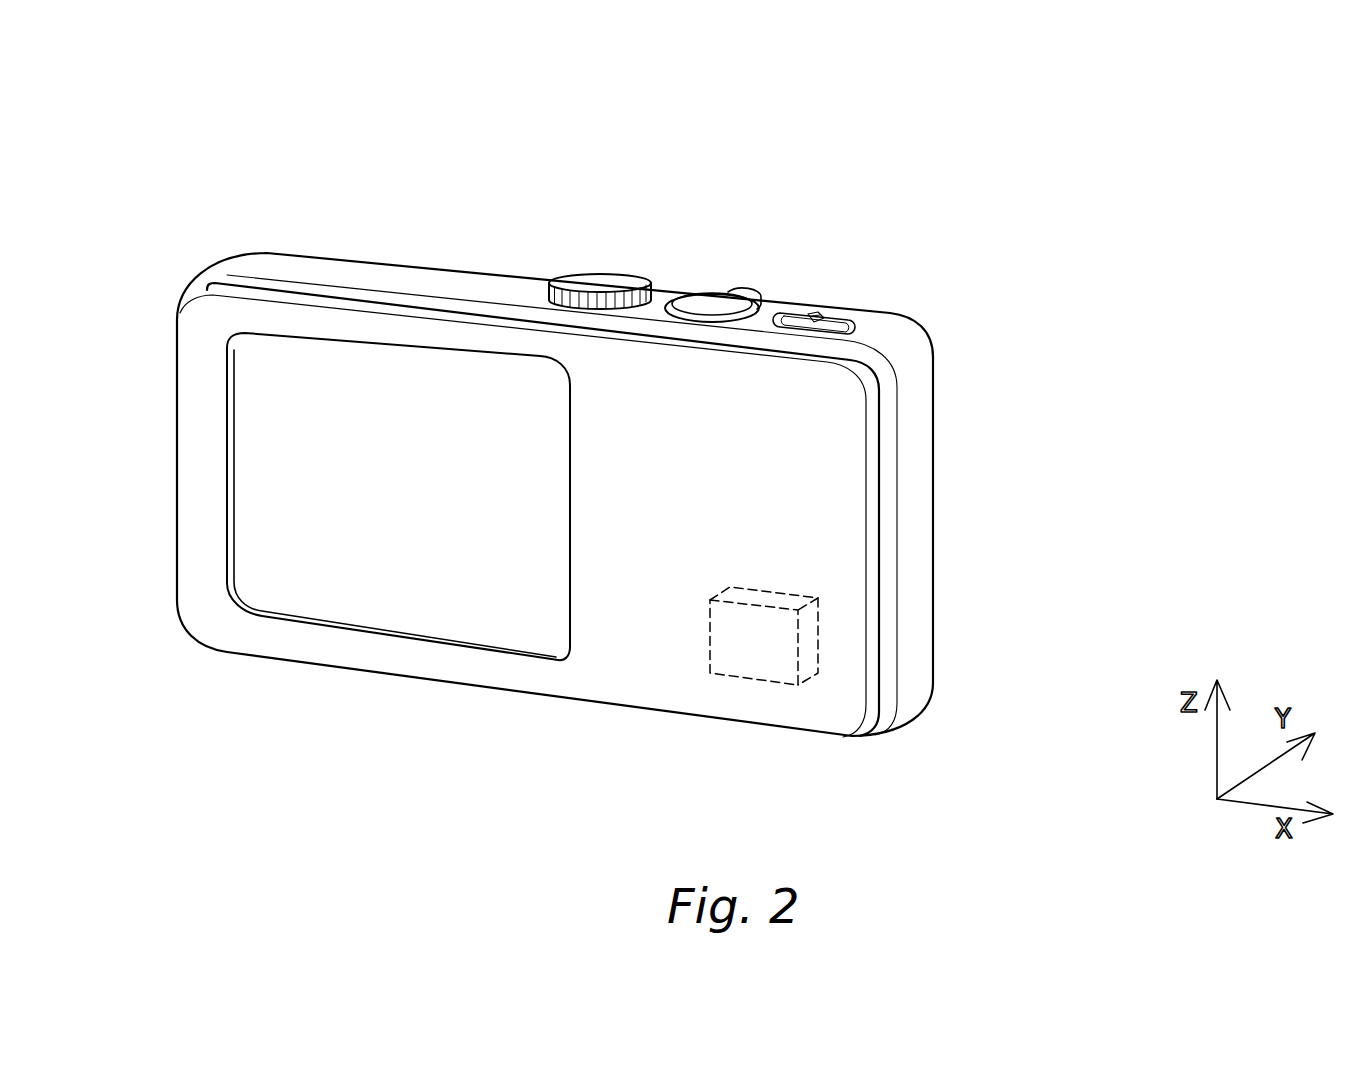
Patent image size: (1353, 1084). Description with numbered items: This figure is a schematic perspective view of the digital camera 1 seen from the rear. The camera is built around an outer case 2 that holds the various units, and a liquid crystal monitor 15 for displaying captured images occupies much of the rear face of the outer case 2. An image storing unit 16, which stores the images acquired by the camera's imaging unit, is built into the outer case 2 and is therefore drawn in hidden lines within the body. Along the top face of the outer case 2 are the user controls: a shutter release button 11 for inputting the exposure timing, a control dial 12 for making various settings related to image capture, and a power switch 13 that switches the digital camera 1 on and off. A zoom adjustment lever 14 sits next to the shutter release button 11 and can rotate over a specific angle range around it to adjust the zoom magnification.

The digital camera 1 is at (1030, 172).
The outer case 2 is at (935, 450).
The shutter release button 11 is at (711, 300).
The control dial 12 is at (593, 277).
The power switch 13 is at (813, 318).
The zoom adjustment lever 14 is at (750, 295).
The liquid crystal monitor 15 is at (278, 453).
The image storing unit 16 is at (767, 650).